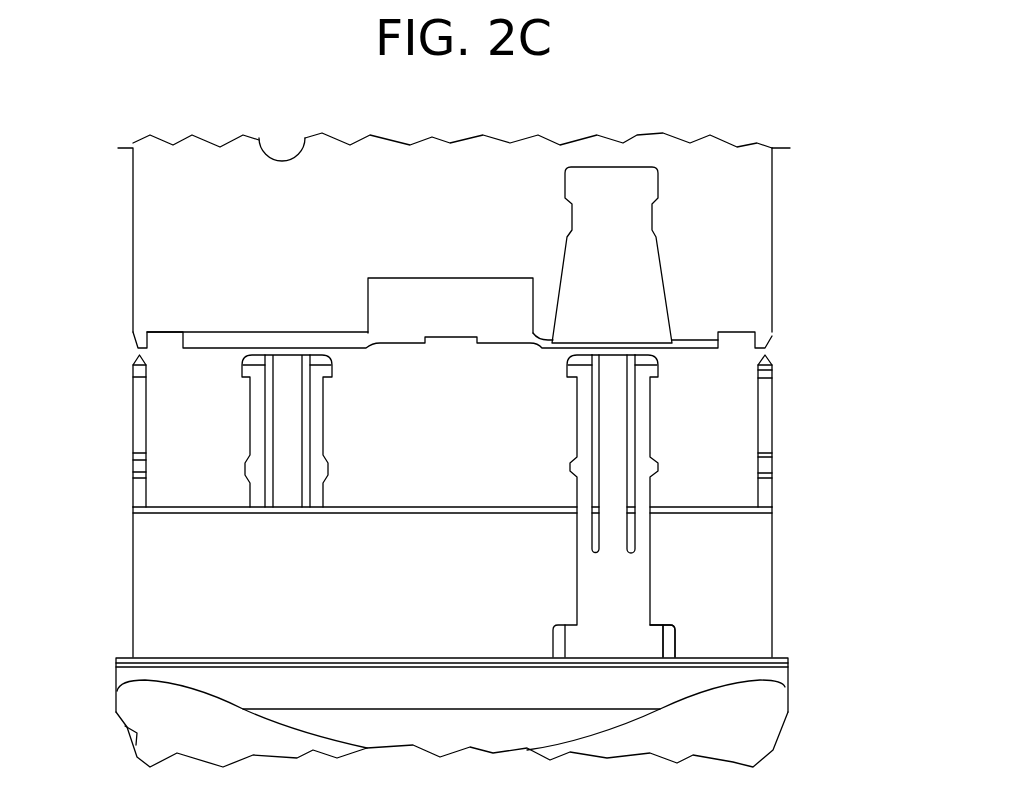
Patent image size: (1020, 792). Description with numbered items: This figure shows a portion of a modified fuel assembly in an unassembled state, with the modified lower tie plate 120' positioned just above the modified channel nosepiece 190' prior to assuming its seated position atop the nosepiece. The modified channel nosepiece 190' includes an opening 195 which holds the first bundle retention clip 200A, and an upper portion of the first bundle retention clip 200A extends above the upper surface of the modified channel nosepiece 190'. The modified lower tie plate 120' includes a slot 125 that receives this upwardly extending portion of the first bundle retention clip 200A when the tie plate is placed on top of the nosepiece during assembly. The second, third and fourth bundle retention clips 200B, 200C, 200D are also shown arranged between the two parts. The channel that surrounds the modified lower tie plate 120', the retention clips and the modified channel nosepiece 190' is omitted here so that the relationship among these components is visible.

The modified lower tie plate 120' is at (454, 240).
The slot 125 is at (623, 278).
The modified channel nosepiece 190' is at (452, 637).
The opening 195 is at (675, 642).
The first bundle retention clip 200A is at (610, 640).
The second bundle retention clip 200B is at (132, 460).
The third bundle retention clip 200C is at (325, 438).
The fourth bundle retention clip 200D is at (773, 418).